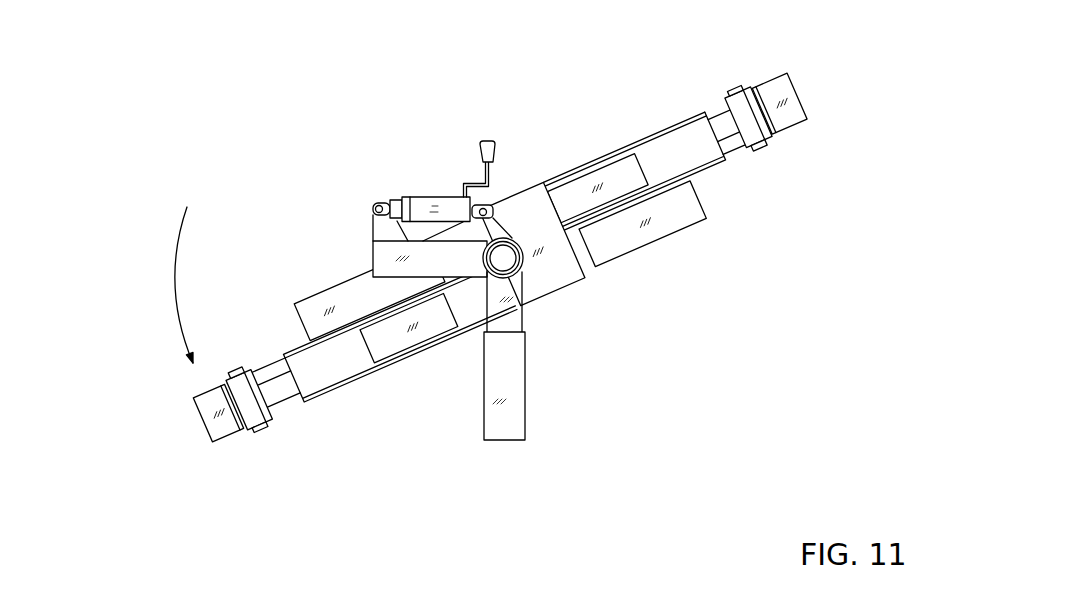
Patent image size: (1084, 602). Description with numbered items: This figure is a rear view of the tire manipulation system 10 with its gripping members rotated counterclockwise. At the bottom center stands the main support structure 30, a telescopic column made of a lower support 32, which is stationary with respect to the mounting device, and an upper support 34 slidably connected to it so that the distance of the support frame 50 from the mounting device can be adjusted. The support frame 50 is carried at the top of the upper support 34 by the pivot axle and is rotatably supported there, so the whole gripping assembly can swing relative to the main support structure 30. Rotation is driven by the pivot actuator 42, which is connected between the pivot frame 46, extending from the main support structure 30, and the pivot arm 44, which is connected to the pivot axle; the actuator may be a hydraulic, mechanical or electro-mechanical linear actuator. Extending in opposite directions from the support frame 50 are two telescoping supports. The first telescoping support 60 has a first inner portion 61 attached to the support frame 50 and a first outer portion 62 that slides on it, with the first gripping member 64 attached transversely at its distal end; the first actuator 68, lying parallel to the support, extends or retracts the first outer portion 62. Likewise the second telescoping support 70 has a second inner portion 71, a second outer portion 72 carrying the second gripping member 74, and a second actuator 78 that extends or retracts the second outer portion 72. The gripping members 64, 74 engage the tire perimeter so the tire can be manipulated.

The tire manipulation system 10 is at (143, 100).
The main support structure 30 is at (578, 361).
The lower support 32 is at (523, 410).
The upper support 34 is at (523, 319).
The pivot actuator 42 is at (415, 197).
The pivot arm 44 is at (487, 230).
The pivot frame 46 is at (383, 257).
The support frame 50 is at (512, 238).
The first telescoping support 60 is at (708, 172).
The first inner portion 61 is at (692, 117).
The first outer portion 62 is at (740, 147).
The first gripping member 64 is at (795, 90).
The first actuator 68 is at (627, 168).
The second telescoping support 70 is at (323, 400).
The second inner portion 71 is at (300, 410).
The second outer portion 72 is at (358, 380).
The second gripping member 74 is at (203, 426).
The second actuator 78 is at (393, 338).